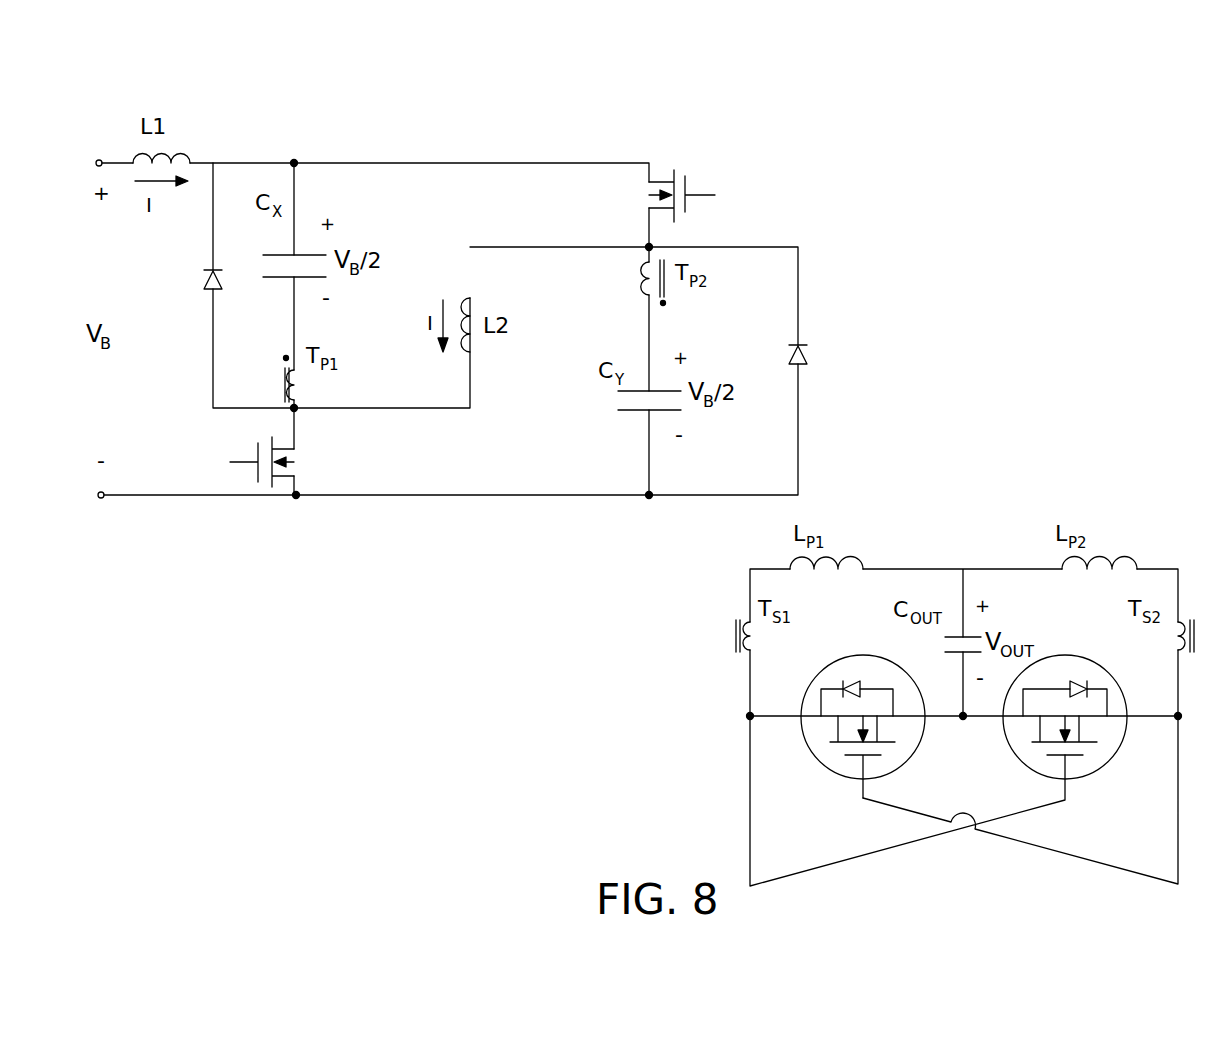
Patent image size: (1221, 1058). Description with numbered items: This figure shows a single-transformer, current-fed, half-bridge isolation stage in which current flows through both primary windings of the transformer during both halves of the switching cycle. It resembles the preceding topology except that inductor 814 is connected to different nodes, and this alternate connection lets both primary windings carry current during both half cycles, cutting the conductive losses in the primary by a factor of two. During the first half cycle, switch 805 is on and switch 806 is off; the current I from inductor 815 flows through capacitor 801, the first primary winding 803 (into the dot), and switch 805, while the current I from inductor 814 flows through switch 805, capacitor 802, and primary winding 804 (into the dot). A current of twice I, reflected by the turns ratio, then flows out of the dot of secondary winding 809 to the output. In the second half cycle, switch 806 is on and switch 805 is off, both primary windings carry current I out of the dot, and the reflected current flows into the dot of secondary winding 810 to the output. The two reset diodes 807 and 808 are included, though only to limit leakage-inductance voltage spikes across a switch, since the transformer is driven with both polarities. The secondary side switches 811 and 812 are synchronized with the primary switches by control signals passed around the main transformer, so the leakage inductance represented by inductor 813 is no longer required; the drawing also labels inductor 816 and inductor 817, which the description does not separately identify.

The capacitor 801 is at (290, 257).
The capacitor 802 is at (632, 412).
The primary winding TP1 803 is at (304, 388).
The primary winding 804 is at (652, 276).
The switch 805 is at (256, 461).
The switch 806 is at (685, 204).
The diode 807 is at (218, 286).
The diode 808 is at (803, 368).
The secondary winding 809 is at (753, 640).
The secondary winding 810 is at (1176, 640).
The synchronous rectifier switch 811 is at (830, 775).
The synchronous rectifier switch 812 is at (1100, 775).
The inductor LP1 813 is at (862, 560).
The inductor 814 is at (1137, 560).
The inductor 815 is at (958, 658).
The inductor L2 816 is at (465, 312).
The inductor L1 817 is at (189, 158).